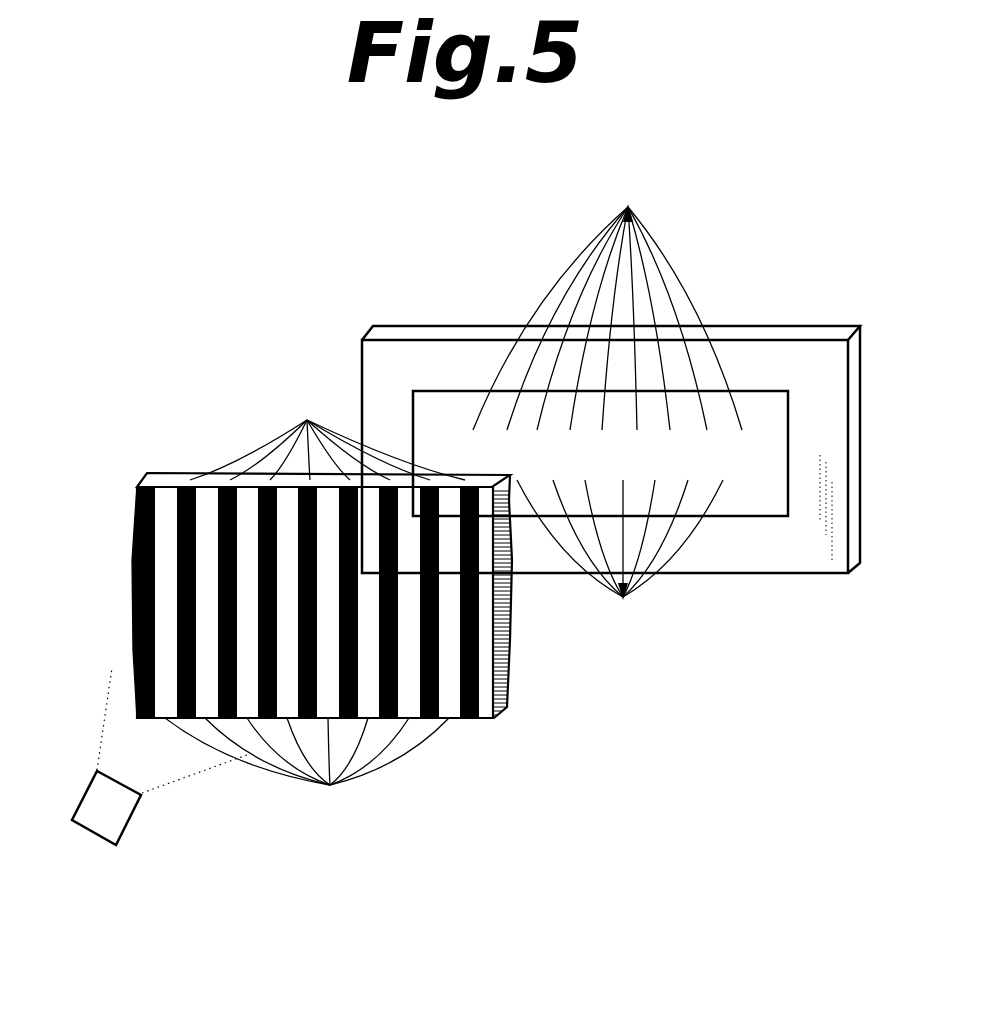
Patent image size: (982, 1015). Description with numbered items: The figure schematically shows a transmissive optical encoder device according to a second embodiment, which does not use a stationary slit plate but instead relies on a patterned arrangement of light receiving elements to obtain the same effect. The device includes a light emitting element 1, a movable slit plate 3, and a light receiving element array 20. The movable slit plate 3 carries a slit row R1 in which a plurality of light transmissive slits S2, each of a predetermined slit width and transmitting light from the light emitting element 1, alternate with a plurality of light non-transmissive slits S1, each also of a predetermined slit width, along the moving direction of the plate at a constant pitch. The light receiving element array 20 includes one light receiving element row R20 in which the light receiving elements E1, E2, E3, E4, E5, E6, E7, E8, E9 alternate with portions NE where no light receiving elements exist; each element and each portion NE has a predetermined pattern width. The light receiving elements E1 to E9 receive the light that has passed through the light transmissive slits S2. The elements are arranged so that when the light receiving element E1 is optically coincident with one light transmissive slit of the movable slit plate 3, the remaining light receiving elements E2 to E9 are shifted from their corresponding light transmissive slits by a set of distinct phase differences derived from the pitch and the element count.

The light emitting element 1 is at (120, 826).
The movable slit plate 3 is at (130, 476).
The light receiving element array 20 is at (384, 322).
The slit row R1 is at (133, 548).
The light receiving element row R20 is at (747, 465).
The light non-transmissive slits S1 is at (327, 429).
The light transmissive slits S2 is at (307, 771).
The portions where no light receiving elements exist NE is at (620, 558).
The light receiving element E1 is at (550, 318).
The light receiving element E2 is at (567, 318).
The light receiving element E3 is at (582, 318).
The light receiving element E4 is at (599, 318).
The light receiving element E5 is at (615, 318).
The light receiving element E6 is at (632, 318).
The light receiving element E7 is at (649, 318).
The light receiving element E8 is at (667, 318).
The light receiving element E9 is at (685, 318).